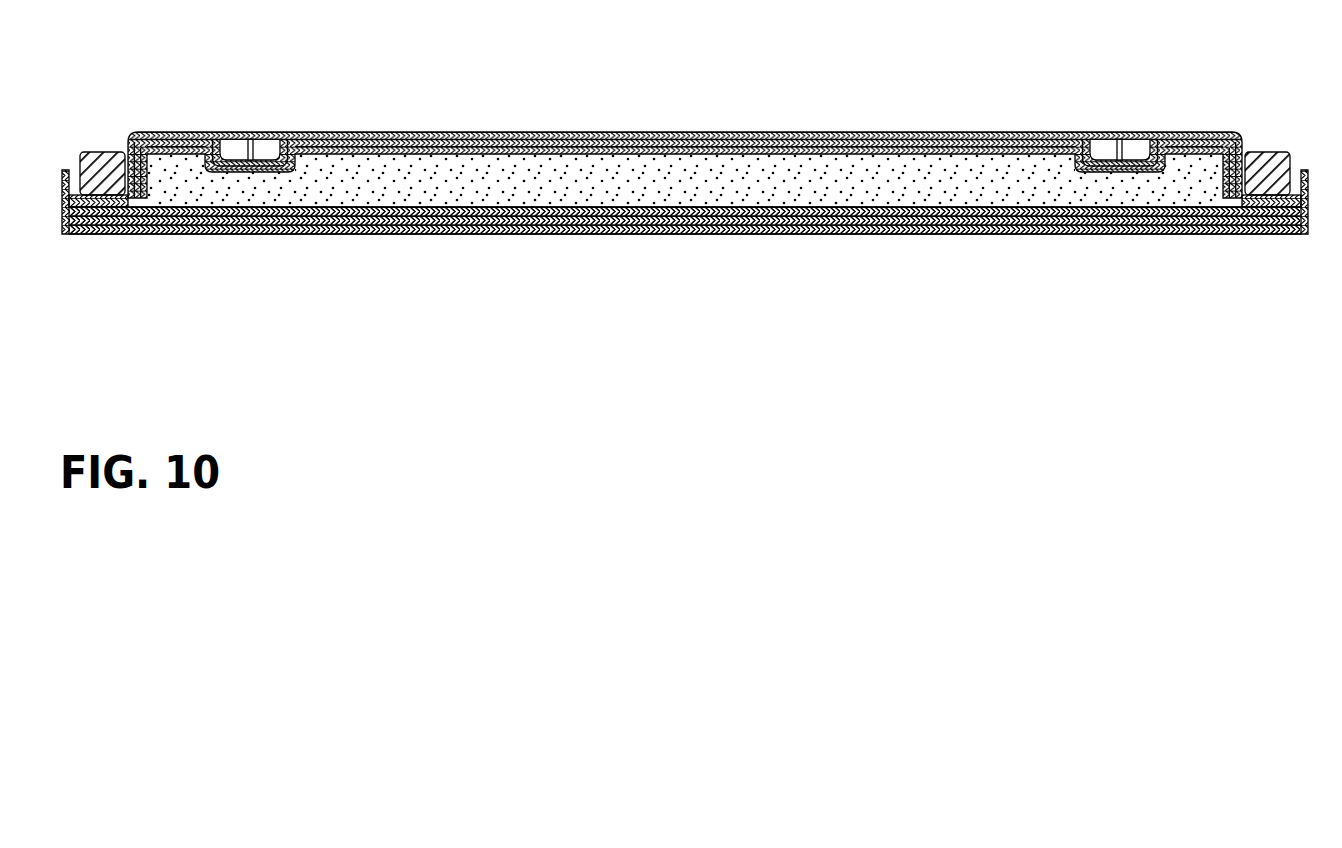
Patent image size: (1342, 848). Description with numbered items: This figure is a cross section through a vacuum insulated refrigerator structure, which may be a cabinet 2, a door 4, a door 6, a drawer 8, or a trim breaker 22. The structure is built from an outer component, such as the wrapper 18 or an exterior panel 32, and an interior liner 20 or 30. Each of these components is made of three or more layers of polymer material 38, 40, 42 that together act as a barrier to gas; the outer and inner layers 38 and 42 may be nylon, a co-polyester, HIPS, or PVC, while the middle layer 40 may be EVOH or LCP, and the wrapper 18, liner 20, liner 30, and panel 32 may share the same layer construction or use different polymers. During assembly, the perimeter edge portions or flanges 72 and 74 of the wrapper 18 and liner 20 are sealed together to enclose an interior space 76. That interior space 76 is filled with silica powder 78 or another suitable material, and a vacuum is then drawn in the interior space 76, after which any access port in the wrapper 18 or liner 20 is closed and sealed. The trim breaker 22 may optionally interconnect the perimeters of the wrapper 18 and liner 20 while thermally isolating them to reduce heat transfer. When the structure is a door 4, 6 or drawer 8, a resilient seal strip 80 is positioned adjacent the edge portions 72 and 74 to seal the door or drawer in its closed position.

The cabinet 2 is at (816, 112).
The door 4 is at (694, 178).
The door 6 is at (694, 178).
The drawer 8 is at (694, 178).
The trim breaker 22 is at (694, 178).
The wrapper 18 is at (685, 258).
The exterior panel 32 is at (633, 236).
The interior liner 20 is at (685, 171).
The interior liner 30 is at (685, 171).
The polymer material layer 38 is at (441, 134).
The polymer material layer 40 is at (406, 143).
The polymer material layer 42 is at (361, 150).
The perimeter edge portion or flange 72 is at (75, 192).
The perimeter edge portion or flange 74 is at (85, 235).
The interior space 76 is at (165, 198).
The silica powder 78 is at (731, 196).
The resilient seal strip 80 is at (107, 152).